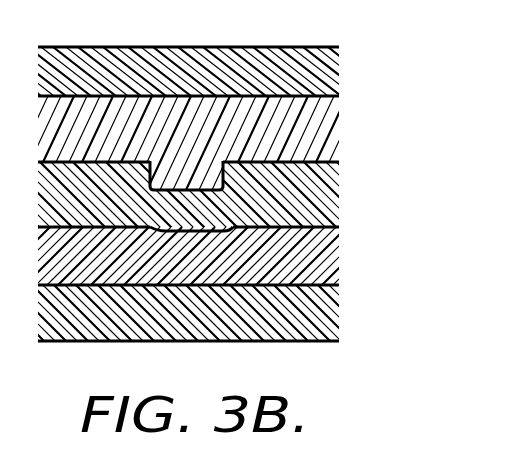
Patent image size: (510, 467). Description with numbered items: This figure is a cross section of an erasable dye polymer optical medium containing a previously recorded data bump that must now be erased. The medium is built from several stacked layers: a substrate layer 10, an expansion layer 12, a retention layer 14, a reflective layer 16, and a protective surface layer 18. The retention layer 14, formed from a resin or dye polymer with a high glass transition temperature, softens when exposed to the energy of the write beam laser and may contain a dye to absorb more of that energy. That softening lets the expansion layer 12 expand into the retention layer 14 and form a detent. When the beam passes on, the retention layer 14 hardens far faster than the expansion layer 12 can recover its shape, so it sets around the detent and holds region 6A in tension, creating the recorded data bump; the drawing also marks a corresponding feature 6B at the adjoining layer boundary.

The substrate layer 10 is at (339, 73).
The expansion layer 12 is at (339, 131).
The retention layer 14 is at (339, 190).
The reflective layer 16 is at (339, 257).
The protective surface layer 18 is at (339, 313).
The region held in tension 6A is at (193, 182).
The dip / depression 6B is at (162, 209).